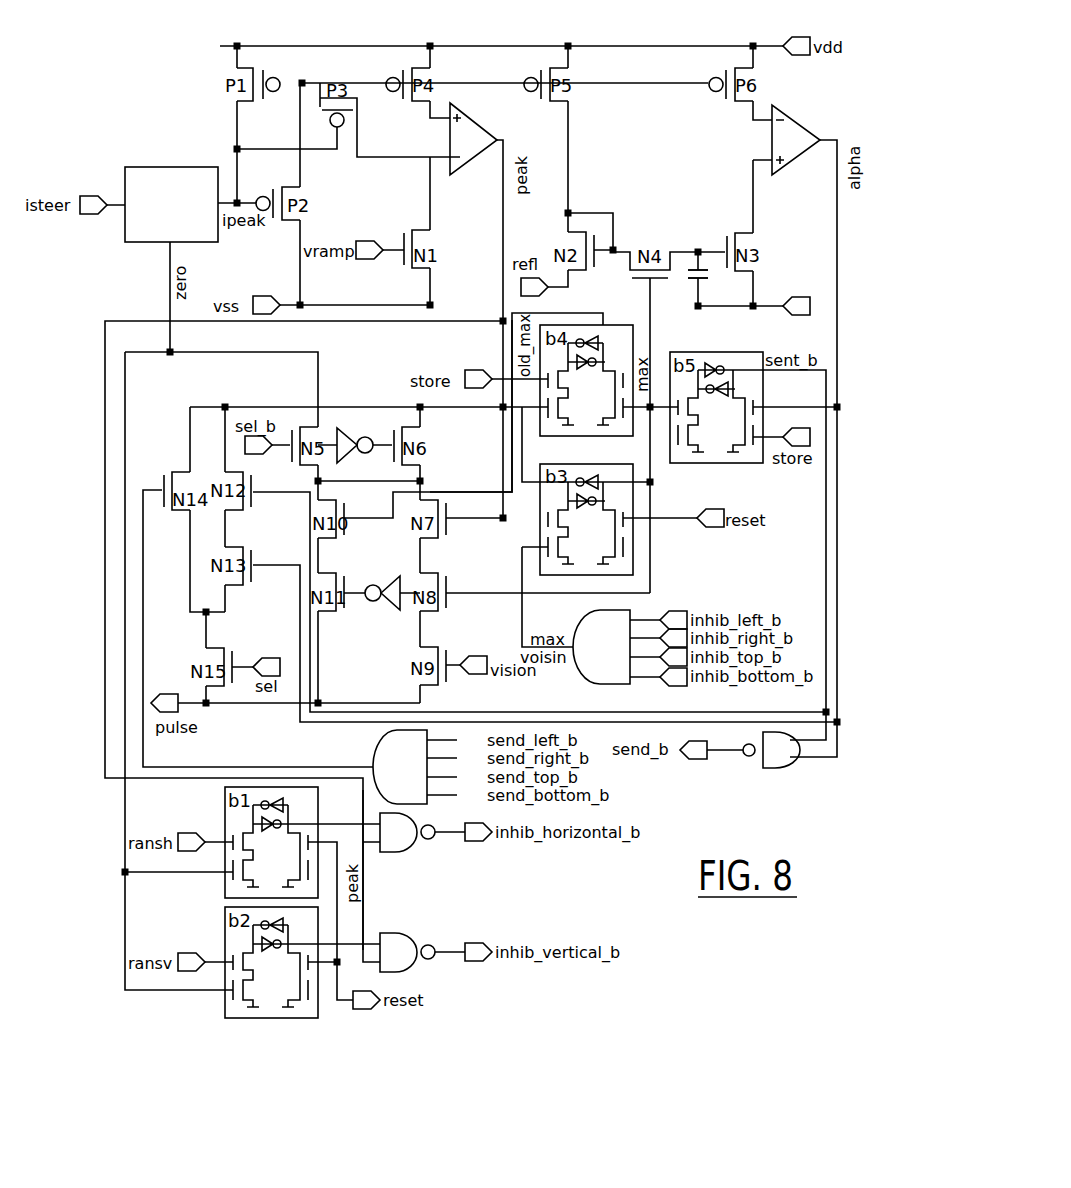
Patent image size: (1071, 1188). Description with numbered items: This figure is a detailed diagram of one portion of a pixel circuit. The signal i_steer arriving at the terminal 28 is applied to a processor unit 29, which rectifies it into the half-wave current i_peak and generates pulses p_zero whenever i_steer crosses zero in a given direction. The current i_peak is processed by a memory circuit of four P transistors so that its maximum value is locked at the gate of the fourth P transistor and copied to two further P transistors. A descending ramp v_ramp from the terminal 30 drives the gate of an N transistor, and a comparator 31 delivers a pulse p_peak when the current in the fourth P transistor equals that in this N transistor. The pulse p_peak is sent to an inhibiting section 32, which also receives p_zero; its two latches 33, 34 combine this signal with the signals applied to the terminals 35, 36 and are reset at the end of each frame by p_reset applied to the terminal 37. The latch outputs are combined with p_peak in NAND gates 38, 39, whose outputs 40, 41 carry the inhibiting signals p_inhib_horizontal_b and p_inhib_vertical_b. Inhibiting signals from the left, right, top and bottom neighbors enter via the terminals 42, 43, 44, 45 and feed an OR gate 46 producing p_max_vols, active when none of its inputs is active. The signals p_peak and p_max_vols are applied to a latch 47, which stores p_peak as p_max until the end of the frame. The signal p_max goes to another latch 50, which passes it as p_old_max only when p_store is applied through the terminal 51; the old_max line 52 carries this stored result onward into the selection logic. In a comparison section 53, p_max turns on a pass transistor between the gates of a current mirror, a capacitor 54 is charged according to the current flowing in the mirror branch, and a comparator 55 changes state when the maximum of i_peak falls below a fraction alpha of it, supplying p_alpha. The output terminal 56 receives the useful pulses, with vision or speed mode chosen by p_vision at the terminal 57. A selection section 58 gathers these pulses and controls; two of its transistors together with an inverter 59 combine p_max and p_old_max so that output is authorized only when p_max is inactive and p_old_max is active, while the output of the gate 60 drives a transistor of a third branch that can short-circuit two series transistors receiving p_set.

The terminal 28 is at (88, 197).
The processor unit 29 is at (158, 175).
The terminal 30 is at (365, 242).
The comparator 31 is at (476, 146).
The inhibiting section 32 is at (393, 899).
The latch 33 is at (233, 887).
The latch 34 is at (238, 1008).
The terminal 35 is at (188, 838).
The terminal 36 is at (187, 958).
The terminal 37 is at (372, 1005).
The NAND gate 38 is at (400, 845).
The NAND gate 39 is at (404, 965).
The output 40 is at (478, 838).
The output 41 is at (478, 942).
The terminal 42 is at (682, 613).
The terminal 43 is at (672, 634).
The terminal 44 is at (668, 660).
The terminal 45 is at (678, 678).
The OR gate 46 is at (597, 668).
The latch 47 is at (633, 559).
The latch 50 is at (614, 338).
The terminal 51 is at (469, 370).
The old_max line 52 is at (512, 445).
The comparison section 53 is at (645, 104).
The capacitor 54 is at (688, 271).
The comparator 55 is at (789, 131).
The output terminal 56 is at (165, 695).
The terminal 57 is at (476, 641).
The selection section 58 is at (172, 455).
The inverter 59 is at (396, 602).
The gate 60 is at (392, 757).